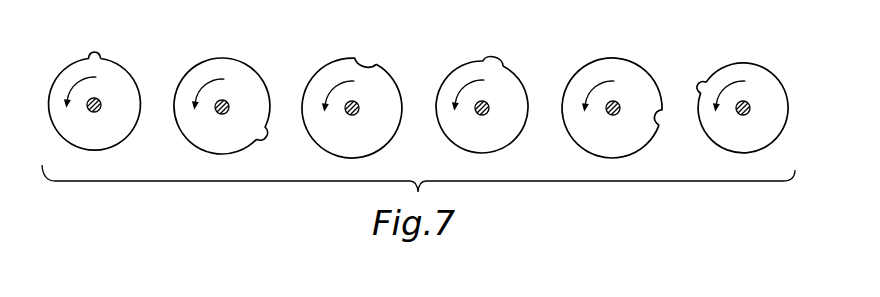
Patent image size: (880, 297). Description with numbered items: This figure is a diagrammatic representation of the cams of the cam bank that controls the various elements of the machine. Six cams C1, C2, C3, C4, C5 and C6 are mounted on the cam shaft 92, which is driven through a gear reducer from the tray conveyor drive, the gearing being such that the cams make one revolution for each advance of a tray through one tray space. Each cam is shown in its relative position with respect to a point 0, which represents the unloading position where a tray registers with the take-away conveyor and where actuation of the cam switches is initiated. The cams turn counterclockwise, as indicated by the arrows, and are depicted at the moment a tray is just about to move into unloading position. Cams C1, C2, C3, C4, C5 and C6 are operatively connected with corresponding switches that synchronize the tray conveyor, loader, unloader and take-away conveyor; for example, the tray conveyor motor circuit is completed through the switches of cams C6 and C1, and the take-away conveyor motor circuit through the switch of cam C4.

The cam shaft 92 is at (99, 110).
The cam C1 is at (95, 101).
The cam C2 is at (222, 106).
The cam C3 is at (352, 108).
The cam C4 is at (482, 105).
The cam C5 is at (612, 108).
The cam C6 is at (742, 108).
The point O 0 is at (94, 51).